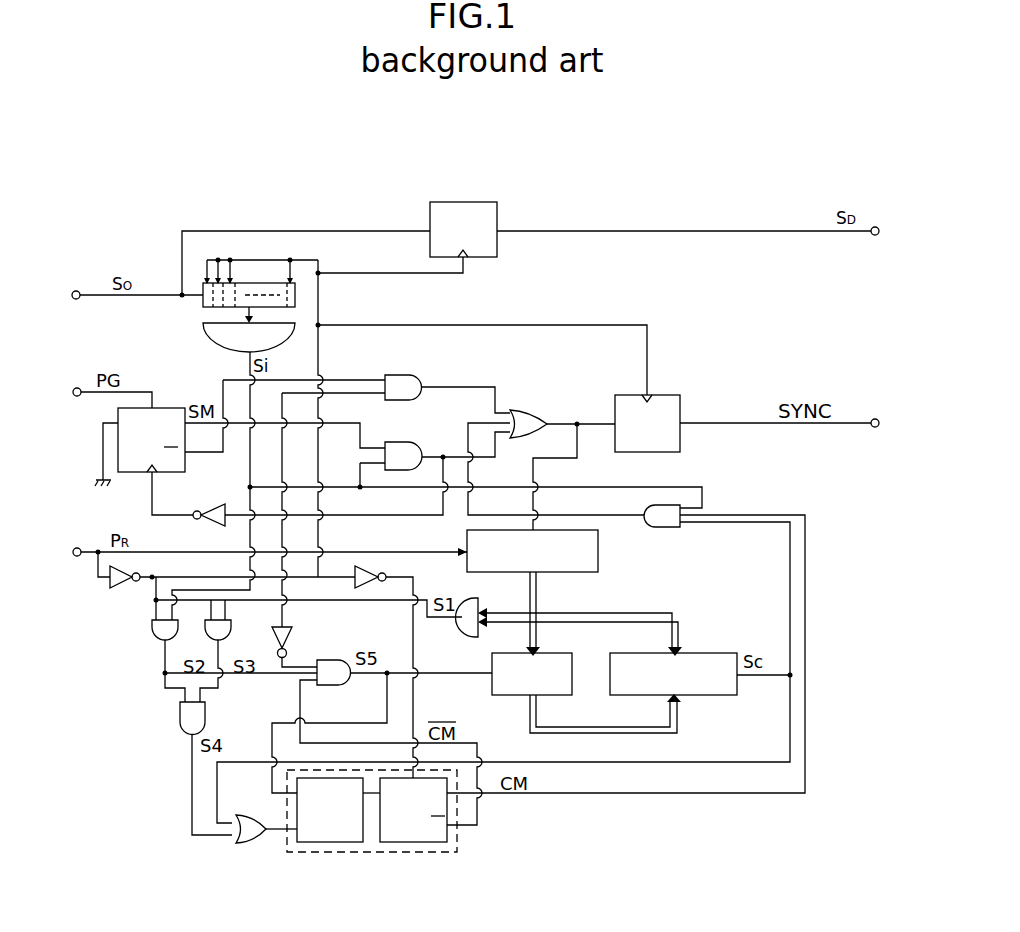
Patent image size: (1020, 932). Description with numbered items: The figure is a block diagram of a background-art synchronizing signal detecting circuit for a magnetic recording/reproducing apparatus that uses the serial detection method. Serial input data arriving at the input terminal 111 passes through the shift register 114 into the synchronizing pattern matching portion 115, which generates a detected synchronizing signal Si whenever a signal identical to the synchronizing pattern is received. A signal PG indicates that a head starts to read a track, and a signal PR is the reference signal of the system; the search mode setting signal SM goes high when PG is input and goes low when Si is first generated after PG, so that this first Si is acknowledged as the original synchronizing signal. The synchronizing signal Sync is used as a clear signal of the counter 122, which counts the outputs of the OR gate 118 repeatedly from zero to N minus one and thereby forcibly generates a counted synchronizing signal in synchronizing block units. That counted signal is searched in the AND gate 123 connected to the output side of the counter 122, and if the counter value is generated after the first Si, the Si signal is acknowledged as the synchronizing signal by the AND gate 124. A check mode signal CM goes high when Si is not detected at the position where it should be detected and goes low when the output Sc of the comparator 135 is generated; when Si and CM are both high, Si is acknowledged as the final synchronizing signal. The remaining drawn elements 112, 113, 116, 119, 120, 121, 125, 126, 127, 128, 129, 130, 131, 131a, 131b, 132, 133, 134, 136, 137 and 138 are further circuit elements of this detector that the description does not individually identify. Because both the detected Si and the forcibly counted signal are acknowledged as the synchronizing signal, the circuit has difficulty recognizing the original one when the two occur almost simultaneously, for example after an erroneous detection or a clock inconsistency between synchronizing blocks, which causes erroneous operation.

The input terminal 111 is at (76, 290).
The input terminal (signal PR) 112 is at (76, 548).
The input terminal (signal PG) 113 is at (76, 388).
The shift register 114 is at (203, 300).
The synchronizing pattern matching portion 115 is at (205, 333).
The D flip-flop 116 is at (173, 407).
The OR gate 118 is at (530, 410).
The AND gate / inverter 119 is at (213, 503).
The D flip-flop 120 is at (680, 445).
The SYNC output terminal 121 is at (873, 427).
The counter 122 is at (580, 572).
The AND gate 123 is at (465, 625).
The AND gate 124 is at (413, 380).
The AND gate 125 is at (153, 633).
The AND gate 126 is at (228, 638).
The AND gate 127 is at (182, 722).
The AND gate 128 is at (325, 685).
The inverter 129 is at (118, 588).
The OR gate 130 is at (244, 840).
The flip-flop circuit 131 is at (412, 832).
The SR flip-flop 131a is at (330, 842).
The D flip-flop 131b is at (413, 842).
The inverter 132 is at (290, 638).
The inverter 133 is at (370, 571).
The register 134 is at (560, 695).
The comparator 135 is at (722, 695).
The AND gate 136 is at (660, 527).
The D flip-flop 137 is at (497, 250).
The SD output terminal 138 is at (873, 235).